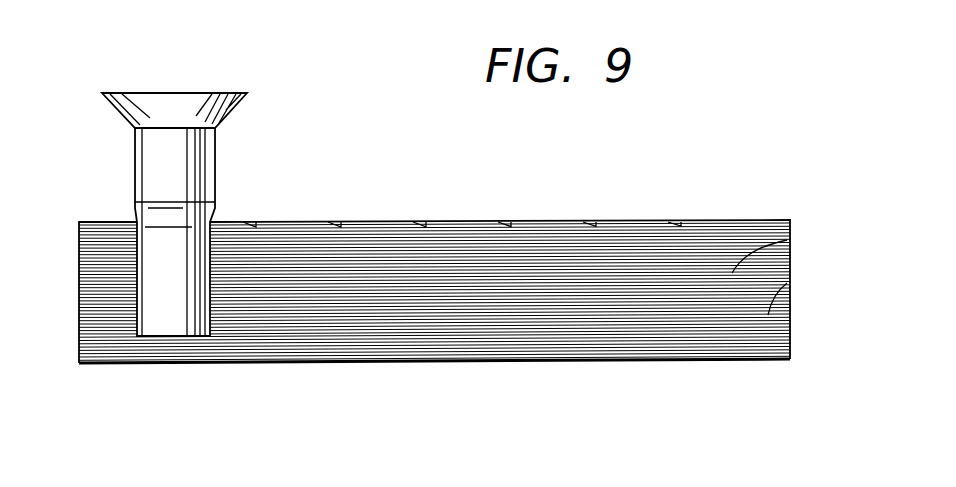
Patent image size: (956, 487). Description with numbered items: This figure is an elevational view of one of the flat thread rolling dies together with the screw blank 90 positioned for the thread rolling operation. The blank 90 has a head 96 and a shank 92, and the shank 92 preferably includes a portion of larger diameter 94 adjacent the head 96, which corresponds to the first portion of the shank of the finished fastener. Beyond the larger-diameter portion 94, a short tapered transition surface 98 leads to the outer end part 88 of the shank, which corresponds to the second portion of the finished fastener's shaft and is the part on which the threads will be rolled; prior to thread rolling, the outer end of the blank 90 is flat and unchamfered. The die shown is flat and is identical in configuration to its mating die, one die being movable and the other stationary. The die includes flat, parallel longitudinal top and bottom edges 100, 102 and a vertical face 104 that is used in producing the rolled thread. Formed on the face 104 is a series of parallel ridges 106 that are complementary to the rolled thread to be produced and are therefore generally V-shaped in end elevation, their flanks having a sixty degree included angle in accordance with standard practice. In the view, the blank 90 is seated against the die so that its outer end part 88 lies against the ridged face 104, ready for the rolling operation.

The outer end part of the shank 88 is at (175, 322).
The blank 90 is at (179, 219).
The shank 92 is at (135, 161).
The portion of larger diameter 94 is at (165, 203).
The head 96 is at (165, 110).
The tapered transition surface 98 is at (137, 220).
The top edge 100 is at (558, 219).
The bottom edge 102 is at (437, 363).
The vertical face 104 is at (787, 240).
The parallel ridges 106 is at (792, 277).